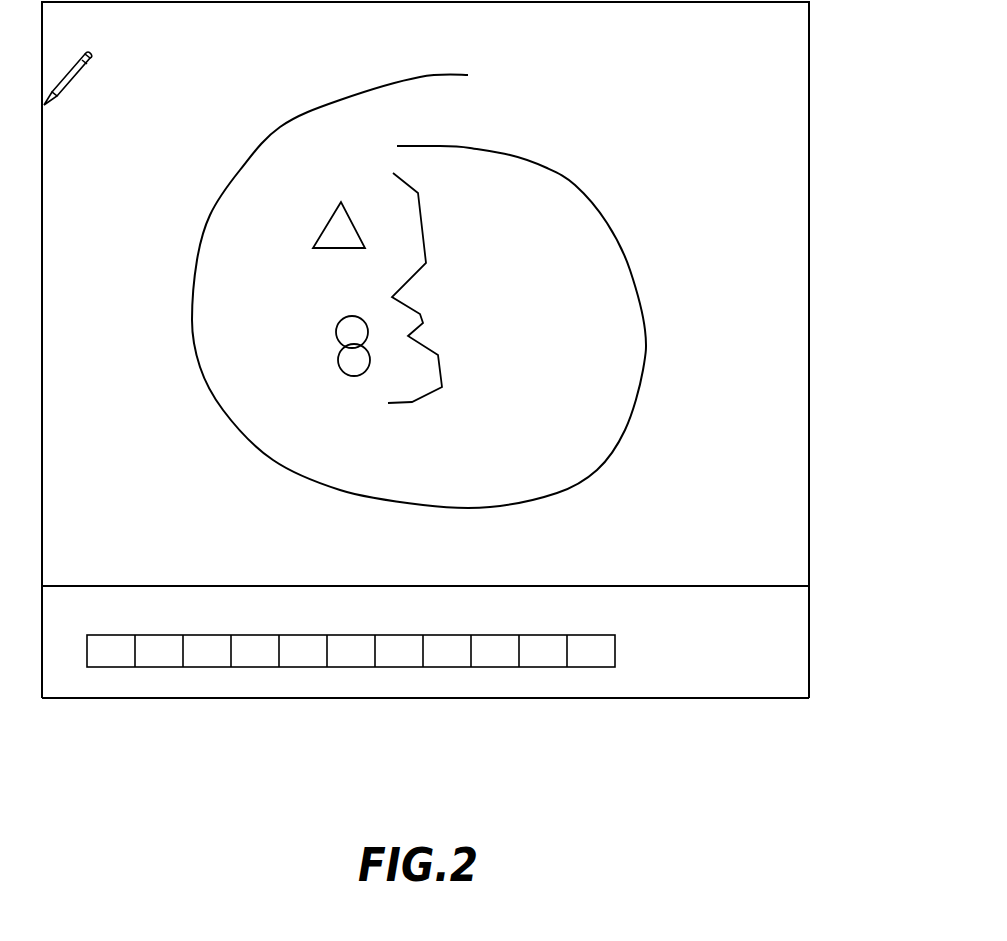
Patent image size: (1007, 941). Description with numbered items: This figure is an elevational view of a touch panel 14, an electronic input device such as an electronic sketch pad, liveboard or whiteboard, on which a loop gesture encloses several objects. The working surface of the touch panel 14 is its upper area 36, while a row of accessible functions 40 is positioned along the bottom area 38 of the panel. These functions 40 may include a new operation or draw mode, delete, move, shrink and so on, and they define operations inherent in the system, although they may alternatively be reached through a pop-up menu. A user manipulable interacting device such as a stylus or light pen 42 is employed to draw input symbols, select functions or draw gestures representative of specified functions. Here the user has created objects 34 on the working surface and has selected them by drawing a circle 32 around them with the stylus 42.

The touch panel 14 is at (809, 328).
The circle 32 is at (596, 472).
The objects 34 is at (423, 323).
The upper area 36 is at (790, 99).
The bottom area 38 is at (63, 686).
The accessible functions 40 is at (441, 657).
The stylus 42 is at (88, 68).